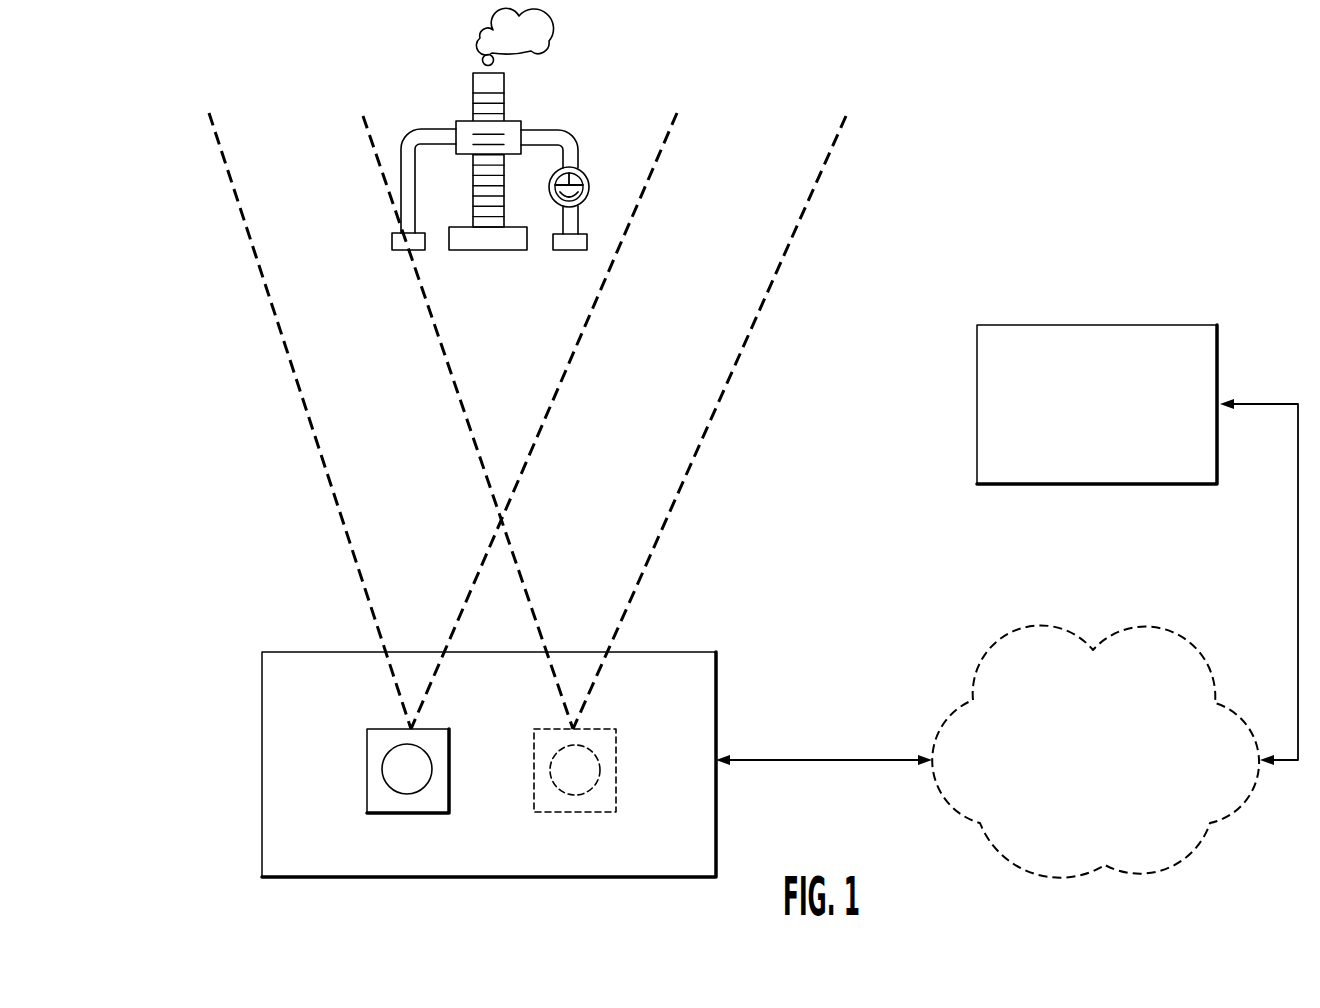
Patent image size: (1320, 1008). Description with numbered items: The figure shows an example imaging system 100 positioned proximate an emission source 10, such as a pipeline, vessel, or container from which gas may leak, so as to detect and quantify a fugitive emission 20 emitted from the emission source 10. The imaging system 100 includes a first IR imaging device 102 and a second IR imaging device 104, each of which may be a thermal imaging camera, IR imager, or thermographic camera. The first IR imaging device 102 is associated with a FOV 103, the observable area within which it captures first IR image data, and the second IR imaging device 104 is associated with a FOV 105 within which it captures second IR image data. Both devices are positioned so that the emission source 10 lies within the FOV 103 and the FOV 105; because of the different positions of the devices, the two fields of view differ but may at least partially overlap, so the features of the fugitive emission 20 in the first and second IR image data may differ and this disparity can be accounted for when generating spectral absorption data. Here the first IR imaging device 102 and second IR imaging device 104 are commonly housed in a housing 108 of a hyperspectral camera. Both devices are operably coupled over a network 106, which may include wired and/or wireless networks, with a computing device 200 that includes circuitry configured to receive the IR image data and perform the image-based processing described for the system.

The emission source 10 is at (495, 60).
The fugitive emission 20 is at (548, 40).
The imaging system 100 is at (255, 609).
The first IR imaging device 102 is at (398, 813).
The FOV 103 is at (342, 514).
The second IR imaging device 104 is at (572, 813).
The FOV 105 is at (713, 422).
The network 106 is at (1147, 637).
The housing 108 is at (590, 652).
The computing device 200 is at (1163, 325).